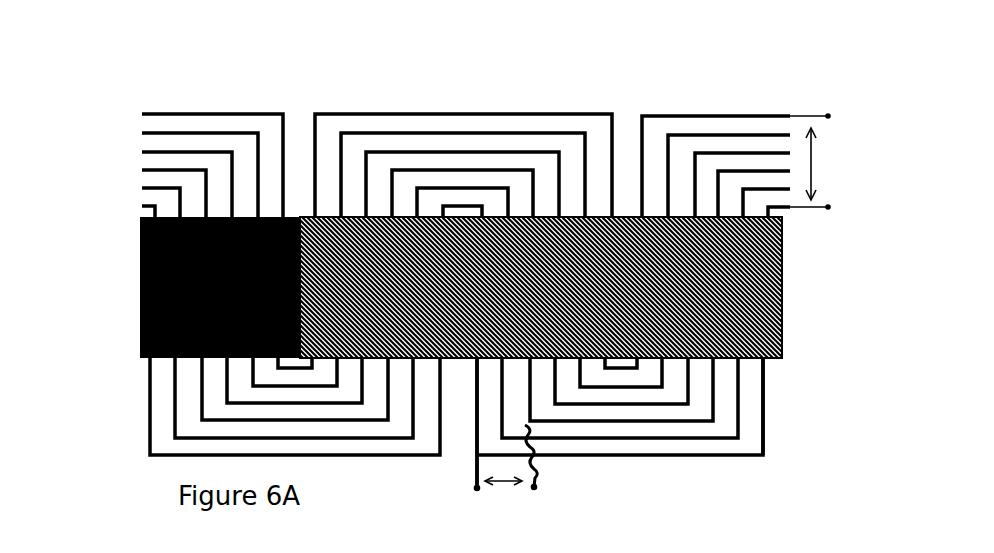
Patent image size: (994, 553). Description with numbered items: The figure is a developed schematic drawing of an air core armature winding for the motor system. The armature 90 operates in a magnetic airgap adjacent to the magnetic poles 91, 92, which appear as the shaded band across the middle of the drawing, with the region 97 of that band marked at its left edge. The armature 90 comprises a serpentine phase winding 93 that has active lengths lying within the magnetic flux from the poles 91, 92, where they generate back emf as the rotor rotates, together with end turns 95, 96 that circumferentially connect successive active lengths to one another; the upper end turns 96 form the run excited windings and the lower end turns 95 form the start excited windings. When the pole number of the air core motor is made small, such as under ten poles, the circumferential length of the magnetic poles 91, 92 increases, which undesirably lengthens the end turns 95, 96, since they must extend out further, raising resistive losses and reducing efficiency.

The armature 90 is at (186, 81).
The magnetic pole 91 is at (782, 305).
The magnetic pole 92 is at (475, 362).
The serpentine phase winding 93 is at (780, 397).
The end turn 95 is at (133, 362).
The end turn 96 is at (130, 112).
The core slot region 97 is at (135, 219).